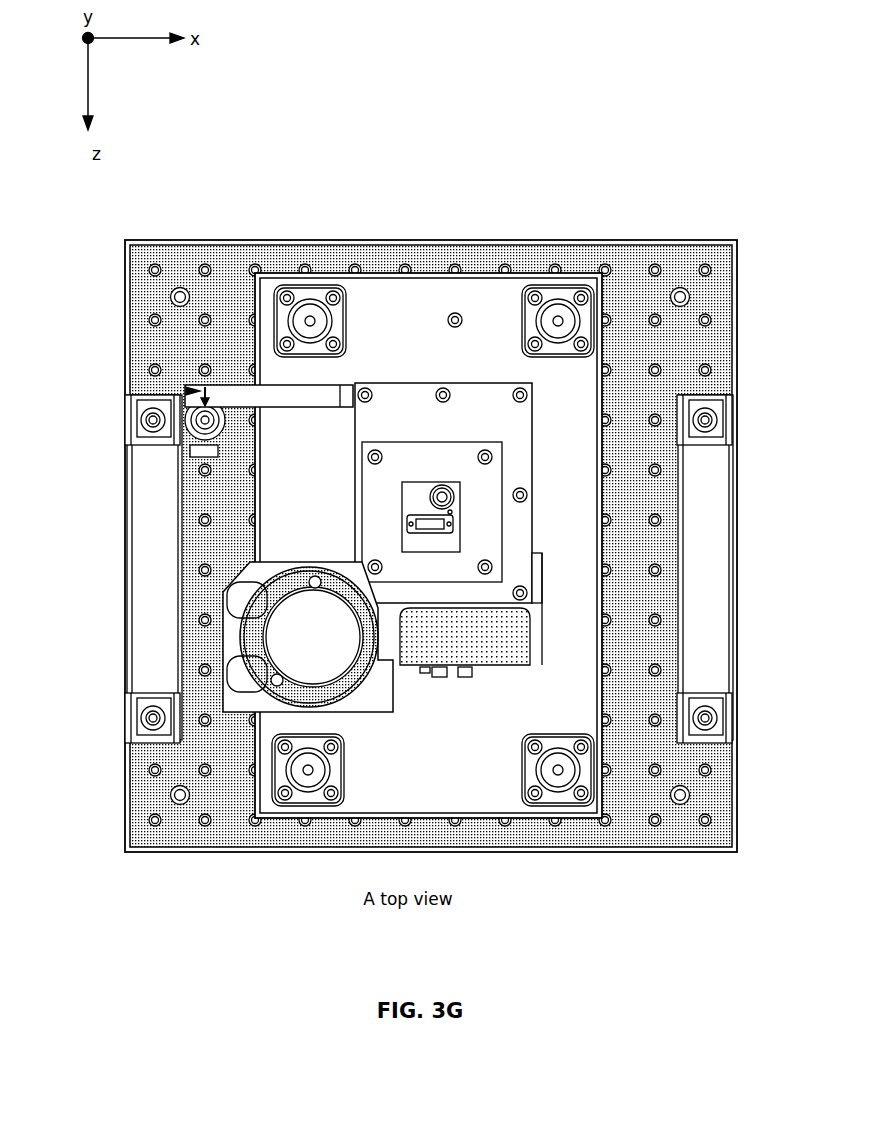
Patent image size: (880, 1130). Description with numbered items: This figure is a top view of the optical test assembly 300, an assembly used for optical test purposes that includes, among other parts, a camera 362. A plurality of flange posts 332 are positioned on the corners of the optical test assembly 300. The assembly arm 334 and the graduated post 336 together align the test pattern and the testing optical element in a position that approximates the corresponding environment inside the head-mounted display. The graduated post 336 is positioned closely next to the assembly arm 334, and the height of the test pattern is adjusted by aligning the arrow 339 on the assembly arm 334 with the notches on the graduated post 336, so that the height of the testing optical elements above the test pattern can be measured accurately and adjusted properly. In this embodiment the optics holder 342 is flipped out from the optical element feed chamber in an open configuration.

The optical test assembly 300 is at (390, 489).
The flange post 332 is at (560, 292).
The assembly arm 334 is at (253, 394).
The graduated post 336 is at (200, 432).
The arrow 339 is at (185, 391).
The optics holder 342 is at (248, 702).
The camera 362 is at (425, 522).